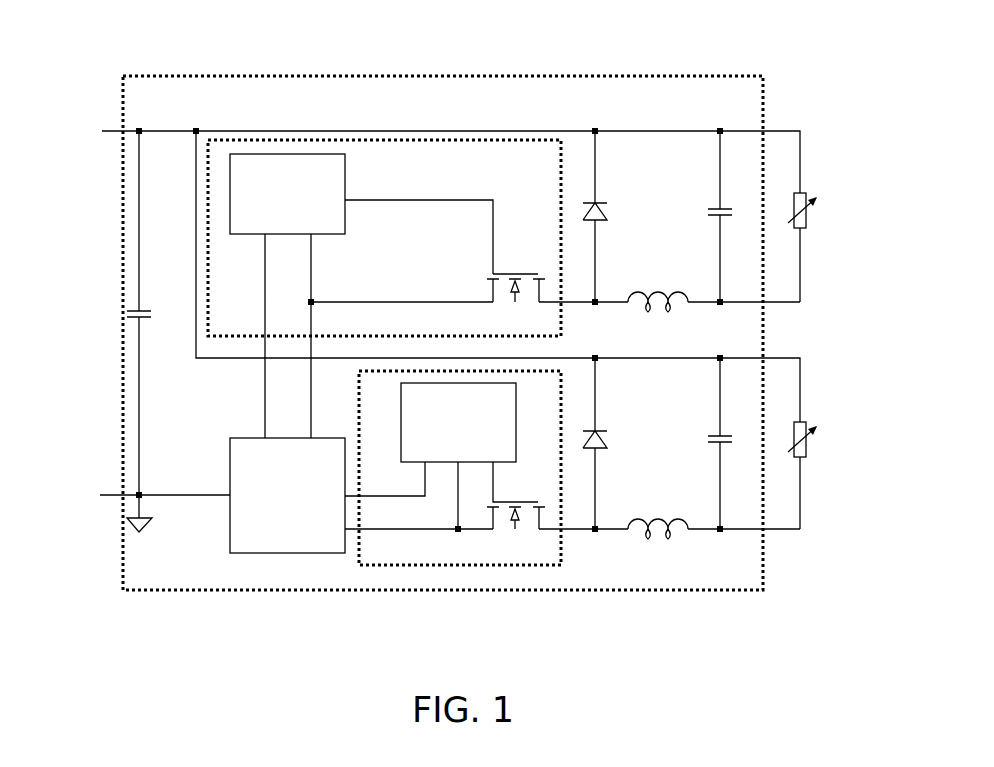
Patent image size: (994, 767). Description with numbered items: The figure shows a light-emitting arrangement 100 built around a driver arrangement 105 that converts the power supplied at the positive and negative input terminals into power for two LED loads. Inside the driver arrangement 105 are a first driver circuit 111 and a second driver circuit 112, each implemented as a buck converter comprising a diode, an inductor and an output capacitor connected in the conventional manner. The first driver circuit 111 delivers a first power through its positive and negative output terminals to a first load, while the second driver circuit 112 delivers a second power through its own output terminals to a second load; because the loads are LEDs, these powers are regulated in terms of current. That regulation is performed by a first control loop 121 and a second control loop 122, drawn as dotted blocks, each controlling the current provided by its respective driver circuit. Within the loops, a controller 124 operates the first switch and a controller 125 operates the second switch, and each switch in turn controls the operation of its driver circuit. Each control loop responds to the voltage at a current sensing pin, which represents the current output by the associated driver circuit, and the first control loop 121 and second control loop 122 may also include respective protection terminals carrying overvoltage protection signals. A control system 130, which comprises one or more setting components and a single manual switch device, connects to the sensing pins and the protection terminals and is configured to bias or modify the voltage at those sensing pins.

The light-emitting arrangement 100 is at (183, 648).
The driver arrangement 105 is at (333, 590).
The first driver circuit 111 is at (682, 100).
The second driver circuit 112 is at (650, 562).
The first control loop 121 is at (384, 262).
The second control loop 122 is at (453, 499).
The controller 124 is at (287, 194).
The controller 125 is at (458, 422).
The control system 130 is at (287, 495).